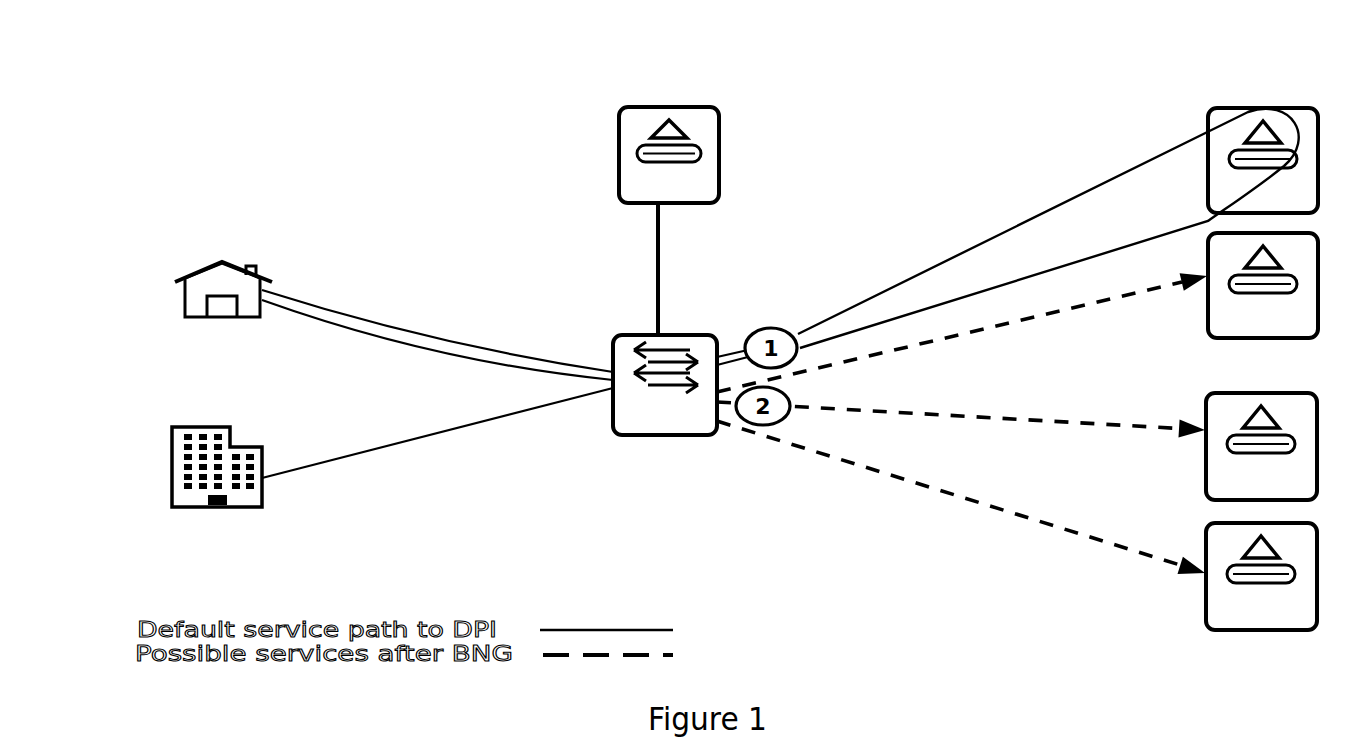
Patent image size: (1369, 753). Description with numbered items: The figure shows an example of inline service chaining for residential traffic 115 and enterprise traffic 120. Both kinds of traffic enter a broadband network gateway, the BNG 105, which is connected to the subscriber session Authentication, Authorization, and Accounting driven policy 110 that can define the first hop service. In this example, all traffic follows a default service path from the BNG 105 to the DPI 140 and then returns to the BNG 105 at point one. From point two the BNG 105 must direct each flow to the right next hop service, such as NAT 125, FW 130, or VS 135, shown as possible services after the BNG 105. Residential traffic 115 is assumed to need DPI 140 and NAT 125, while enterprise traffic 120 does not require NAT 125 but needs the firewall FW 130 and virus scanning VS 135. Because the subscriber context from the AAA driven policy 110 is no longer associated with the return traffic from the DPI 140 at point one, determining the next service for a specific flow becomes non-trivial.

The BNG 105 is at (613, 345).
The AAA driven policy 110 is at (640, 105).
The residential traffic 115 is at (200, 275).
The enterprise traffic 120 is at (183, 425).
The NAT 125 is at (1206, 598).
The FW 130 is at (1206, 462).
The VS 135 is at (1208, 313).
The DPI 140 is at (1230, 105).